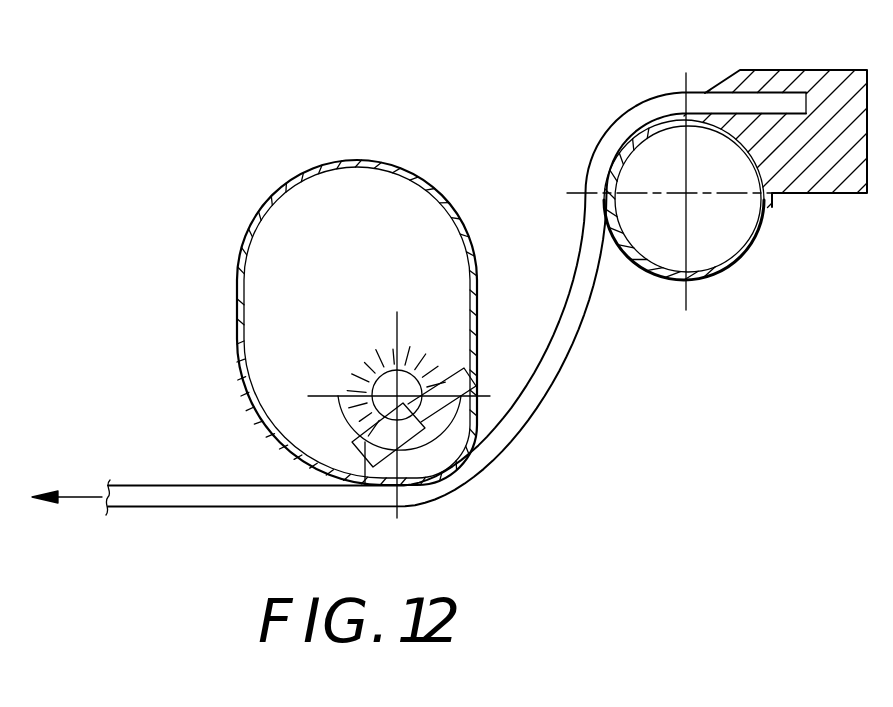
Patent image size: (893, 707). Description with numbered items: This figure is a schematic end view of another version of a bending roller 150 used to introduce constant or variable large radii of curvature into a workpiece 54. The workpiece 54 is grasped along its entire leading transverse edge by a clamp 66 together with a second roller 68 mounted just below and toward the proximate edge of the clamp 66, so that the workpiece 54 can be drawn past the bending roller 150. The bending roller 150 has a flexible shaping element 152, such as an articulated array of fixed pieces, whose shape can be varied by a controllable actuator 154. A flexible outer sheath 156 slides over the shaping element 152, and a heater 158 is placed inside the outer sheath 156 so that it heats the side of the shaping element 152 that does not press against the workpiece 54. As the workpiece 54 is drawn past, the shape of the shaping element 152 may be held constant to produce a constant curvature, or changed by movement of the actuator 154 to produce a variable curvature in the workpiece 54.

The workpiece 54 is at (560, 366).
The clamp 66 is at (786, 70).
The second roller 68 is at (741, 254).
The bending roller 150 is at (288, 464).
The flexible shaping element 152 is at (425, 463).
The controllable actuator 154 is at (368, 442).
The flexible outer sheath 156 is at (475, 232).
The heater 158 is at (372, 372).